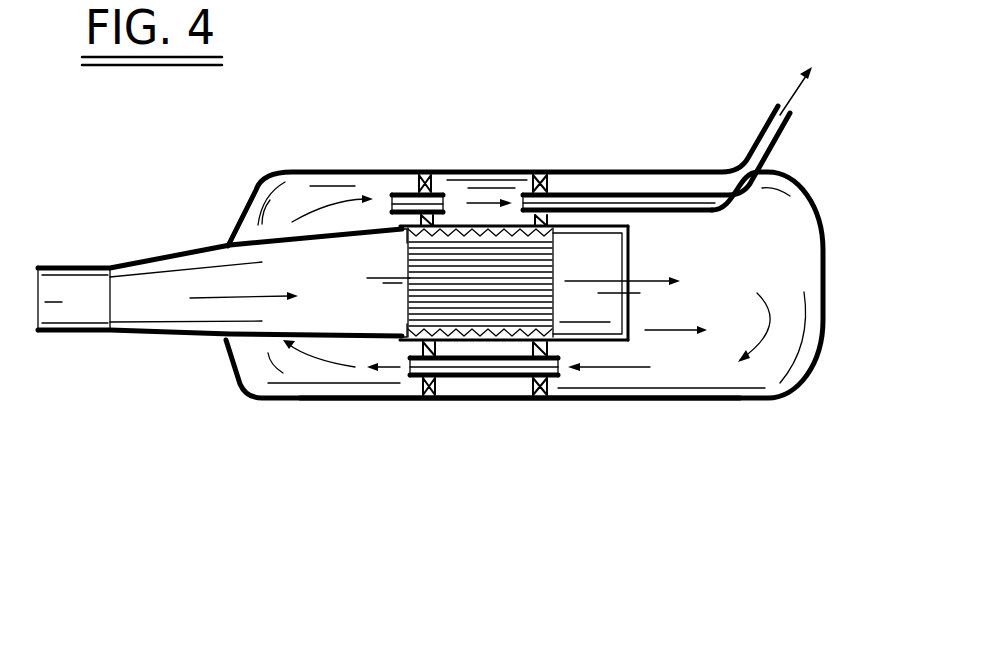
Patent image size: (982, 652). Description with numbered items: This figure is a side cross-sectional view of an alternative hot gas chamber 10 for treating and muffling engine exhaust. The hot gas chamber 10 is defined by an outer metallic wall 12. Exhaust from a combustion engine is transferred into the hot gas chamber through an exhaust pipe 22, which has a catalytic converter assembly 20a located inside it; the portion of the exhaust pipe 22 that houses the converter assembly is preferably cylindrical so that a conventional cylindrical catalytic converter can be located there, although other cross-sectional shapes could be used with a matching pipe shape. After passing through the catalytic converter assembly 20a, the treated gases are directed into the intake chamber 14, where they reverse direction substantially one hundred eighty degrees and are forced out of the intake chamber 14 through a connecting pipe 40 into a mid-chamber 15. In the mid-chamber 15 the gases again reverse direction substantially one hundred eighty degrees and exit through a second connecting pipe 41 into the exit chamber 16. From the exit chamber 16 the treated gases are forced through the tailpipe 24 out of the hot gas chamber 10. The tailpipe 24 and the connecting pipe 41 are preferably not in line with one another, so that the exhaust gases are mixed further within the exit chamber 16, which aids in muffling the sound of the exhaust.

The hot gas chamber 10 is at (621, 410).
The outer metallic wall 12 is at (716, 400).
The intake chamber 14 is at (795, 233).
The mid-chamber 15 is at (291, 202).
The exit chamber 16 is at (480, 193).
The catalytic converter assembly 20a is at (527, 263).
The exhaust pipe 22 is at (175, 335).
The tailpipe 24 is at (760, 128).
The connecting pipe 40 is at (484, 380).
The connecting pipe 41 is at (410, 195).